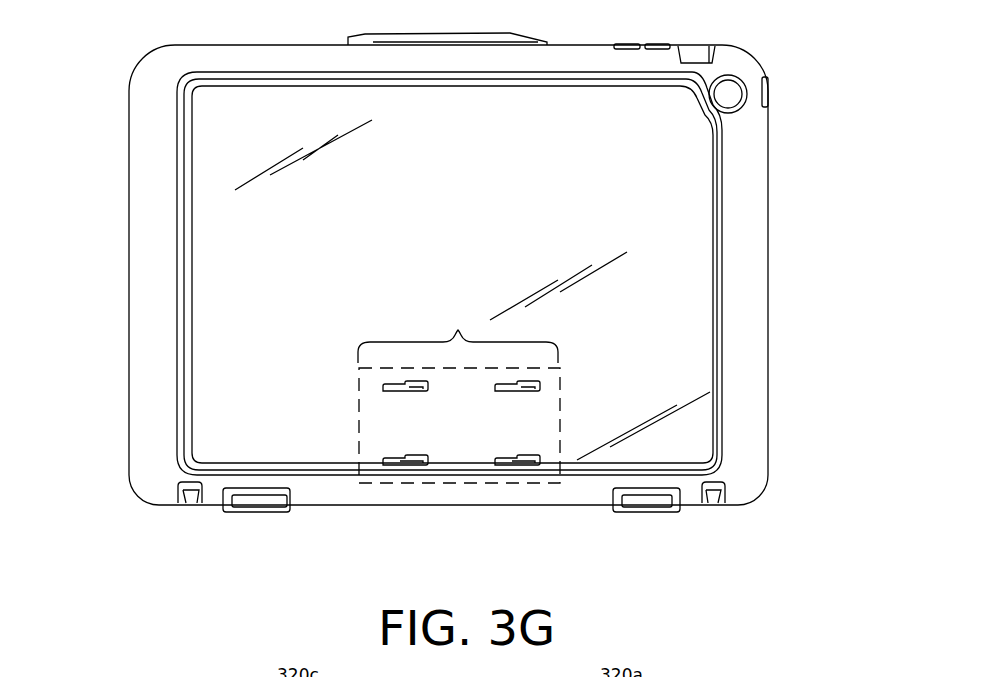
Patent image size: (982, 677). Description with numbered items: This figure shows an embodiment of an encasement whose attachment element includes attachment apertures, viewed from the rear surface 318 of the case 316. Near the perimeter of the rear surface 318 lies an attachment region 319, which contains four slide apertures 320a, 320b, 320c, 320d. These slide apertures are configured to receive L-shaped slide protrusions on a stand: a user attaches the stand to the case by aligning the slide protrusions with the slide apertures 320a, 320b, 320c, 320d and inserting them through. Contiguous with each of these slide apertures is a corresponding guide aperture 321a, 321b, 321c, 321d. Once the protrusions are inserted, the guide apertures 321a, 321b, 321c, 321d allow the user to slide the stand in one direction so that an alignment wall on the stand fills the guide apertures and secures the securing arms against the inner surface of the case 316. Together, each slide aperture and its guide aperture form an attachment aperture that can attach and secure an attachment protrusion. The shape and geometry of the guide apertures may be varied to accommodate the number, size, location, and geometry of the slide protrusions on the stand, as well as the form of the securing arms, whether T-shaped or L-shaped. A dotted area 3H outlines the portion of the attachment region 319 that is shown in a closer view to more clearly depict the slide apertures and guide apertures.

The case 316 is at (113, 88).
The rear surface 318 is at (227, 263).
The attachment region 319 is at (458, 330).
The dotted area 3H is at (565, 380).
The slide aperture 320a is at (575, 502).
The slide aperture 320b is at (434, 505).
The slide aperture 320c is at (331, 477).
The slide aperture 320d is at (675, 425).
The guide aperture 321a is at (508, 460).
The guide aperture 321b is at (400, 463).
The guide aperture 321c is at (383, 388).
The guide aperture 321d is at (515, 389).